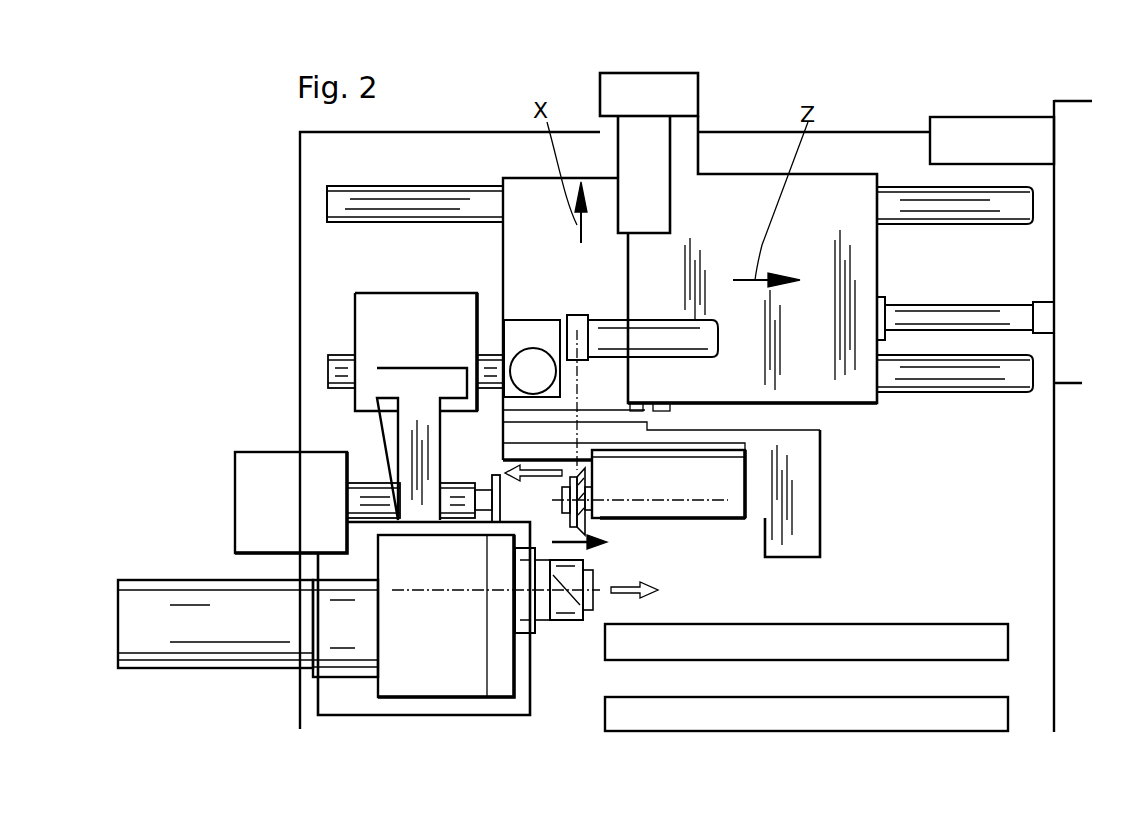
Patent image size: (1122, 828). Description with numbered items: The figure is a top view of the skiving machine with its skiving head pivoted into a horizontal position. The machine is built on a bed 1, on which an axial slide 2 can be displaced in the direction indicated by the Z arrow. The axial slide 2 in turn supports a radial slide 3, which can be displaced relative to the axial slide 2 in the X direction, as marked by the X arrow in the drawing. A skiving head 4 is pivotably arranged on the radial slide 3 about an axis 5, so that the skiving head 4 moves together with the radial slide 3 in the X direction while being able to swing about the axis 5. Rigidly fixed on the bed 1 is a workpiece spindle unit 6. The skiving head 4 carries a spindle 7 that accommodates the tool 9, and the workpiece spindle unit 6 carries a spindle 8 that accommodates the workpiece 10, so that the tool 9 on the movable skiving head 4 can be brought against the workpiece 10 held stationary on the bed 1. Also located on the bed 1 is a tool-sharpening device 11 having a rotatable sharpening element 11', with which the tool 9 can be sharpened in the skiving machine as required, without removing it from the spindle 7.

The bed 1 is at (1020, 590).
The axial slide 2 is at (818, 190).
The radial slide 3 is at (540, 245).
The skiving head 4 is at (790, 447).
The axis 5 is at (578, 388).
The workpiece spindle unit 6 is at (378, 546).
The spindle 7 is at (697, 502).
The spindle 8 is at (458, 590).
The tool 9 is at (585, 518).
The workpiece 10 is at (567, 608).
The tool-sharpening device 11 is at (379, 379).
The rotatable sharpening element 11' is at (373, 457).